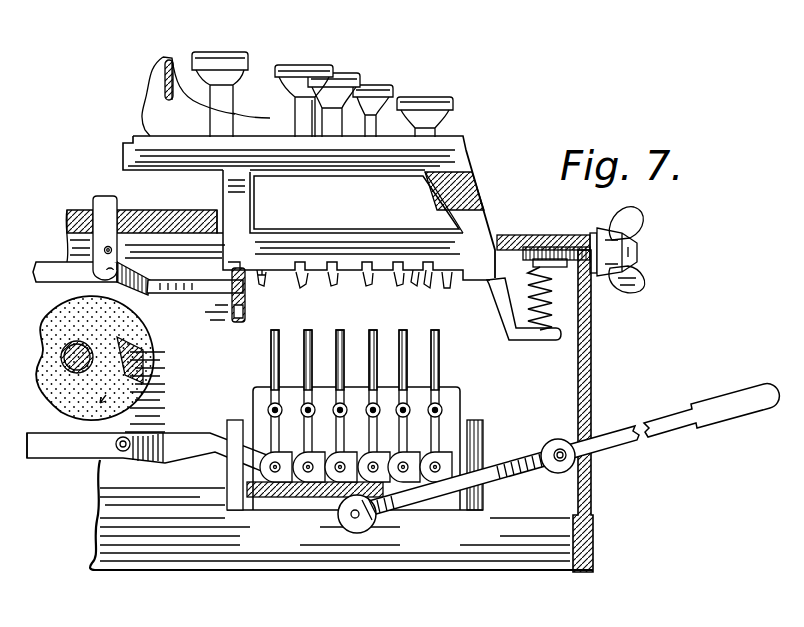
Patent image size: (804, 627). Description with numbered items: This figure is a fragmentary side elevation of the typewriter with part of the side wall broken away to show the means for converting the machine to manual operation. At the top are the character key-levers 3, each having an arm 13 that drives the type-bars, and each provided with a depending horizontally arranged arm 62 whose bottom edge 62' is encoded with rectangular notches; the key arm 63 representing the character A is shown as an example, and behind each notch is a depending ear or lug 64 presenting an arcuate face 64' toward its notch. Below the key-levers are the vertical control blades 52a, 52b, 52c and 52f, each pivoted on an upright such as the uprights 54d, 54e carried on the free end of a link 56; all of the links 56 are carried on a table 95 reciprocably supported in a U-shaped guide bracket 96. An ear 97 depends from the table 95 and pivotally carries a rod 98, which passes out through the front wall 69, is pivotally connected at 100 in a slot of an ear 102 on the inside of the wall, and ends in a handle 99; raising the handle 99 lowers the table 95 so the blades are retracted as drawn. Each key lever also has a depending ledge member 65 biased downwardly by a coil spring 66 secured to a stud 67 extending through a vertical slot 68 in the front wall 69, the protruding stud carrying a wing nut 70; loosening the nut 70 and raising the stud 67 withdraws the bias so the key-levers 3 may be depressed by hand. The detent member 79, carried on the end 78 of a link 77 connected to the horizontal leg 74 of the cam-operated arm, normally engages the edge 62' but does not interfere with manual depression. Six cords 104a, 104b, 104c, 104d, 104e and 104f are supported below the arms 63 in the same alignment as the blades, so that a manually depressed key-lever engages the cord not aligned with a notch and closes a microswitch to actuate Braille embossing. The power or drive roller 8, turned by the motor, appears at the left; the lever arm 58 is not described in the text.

The character key-levers 3 is at (399, 80).
The power or drive roller 8 is at (95, 358).
The arm of a character-key lever 13 is at (124, 146).
The blade 52a is at (308, 372).
The blade 52b is at (273, 368).
The blade 52c is at (342, 363).
The blade 52f is at (438, 372).
The upright 54d is at (378, 371).
The upright 54e is at (408, 371).
The link 56 is at (184, 463).
The lever arm 58 is at (50, 461).
The depending horizontally arranged arm 62 is at (356, 225).
The bottom edge 62' is at (269, 234).
The key arm 63 is at (462, 181).
The depending ear or lug 64 is at (426, 288).
The arcuate face 64' is at (432, 264).
The ledge member 65 is at (537, 343).
The coil spring 66 is at (553, 297).
The stud 67 is at (538, 247).
The vertical slot 68 is at (600, 278).
The front wall 69 is at (575, 404).
The wing nut 70 is at (634, 236).
The second leg 74 is at (50, 262).
The link 77 is at (128, 245).
The end of link 78 is at (217, 300).
The detent member 79 is at (229, 283).
The table 95 is at (292, 500).
The guide bracket 96 is at (445, 505).
The ear 97 is at (373, 511).
The rod 98 is at (520, 474).
The handle 99 is at (710, 408).
The pivotal connection 100 is at (578, 476).
The ear 102 is at (560, 471).
The cord 104a is at (268, 280).
The cord 104b is at (308, 280).
The cord 104c is at (337, 286).
The cord 104d is at (370, 280).
The cord 104e is at (408, 286).
The cord 104f is at (436, 288).